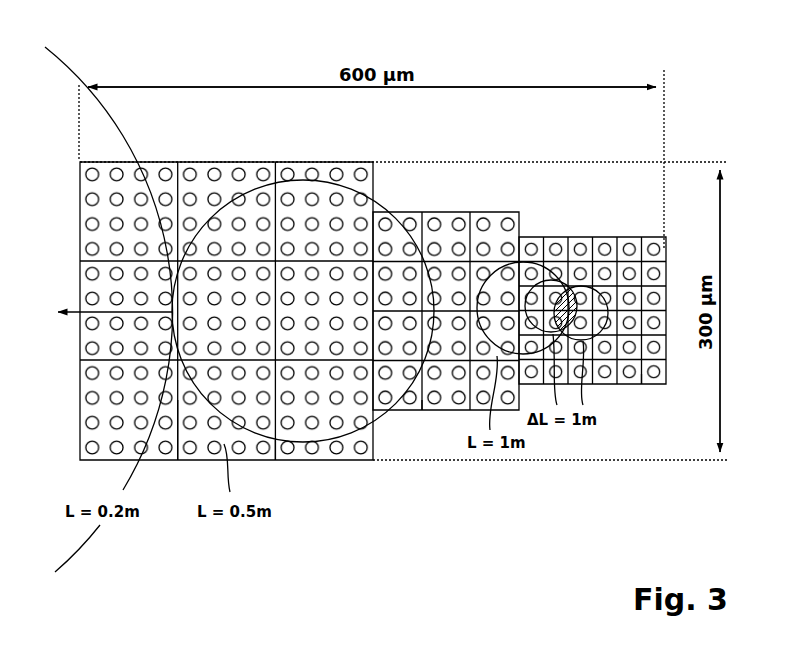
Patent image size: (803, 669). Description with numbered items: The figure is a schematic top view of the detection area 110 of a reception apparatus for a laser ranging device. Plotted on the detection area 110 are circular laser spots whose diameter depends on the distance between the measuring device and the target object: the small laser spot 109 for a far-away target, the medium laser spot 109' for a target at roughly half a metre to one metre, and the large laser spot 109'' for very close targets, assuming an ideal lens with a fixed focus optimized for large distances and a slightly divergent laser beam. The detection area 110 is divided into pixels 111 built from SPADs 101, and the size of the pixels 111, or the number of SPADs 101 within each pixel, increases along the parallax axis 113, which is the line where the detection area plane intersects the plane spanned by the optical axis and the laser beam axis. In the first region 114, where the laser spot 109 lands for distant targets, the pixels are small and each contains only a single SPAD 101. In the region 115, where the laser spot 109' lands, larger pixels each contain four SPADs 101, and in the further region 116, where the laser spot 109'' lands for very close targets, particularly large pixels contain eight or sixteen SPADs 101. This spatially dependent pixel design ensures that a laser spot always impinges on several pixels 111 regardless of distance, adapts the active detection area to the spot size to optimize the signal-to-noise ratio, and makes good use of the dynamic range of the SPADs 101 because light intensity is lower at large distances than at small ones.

The SPAD 101 is at (214, 169).
The laser spot 109 is at (549, 267).
The laser spot 109' is at (303, 275).
The laser spot 109'' is at (109, 299).
The detection area 110 is at (300, 480).
The pixel 111 is at (551, 233).
The parallax axis 113 is at (105, 311).
The first region 114 is at (632, 395).
The region 115 is at (432, 438).
The further region 116 is at (175, 479).